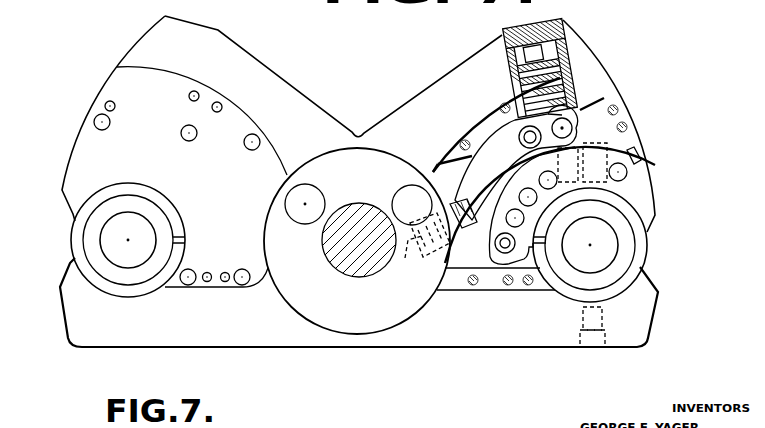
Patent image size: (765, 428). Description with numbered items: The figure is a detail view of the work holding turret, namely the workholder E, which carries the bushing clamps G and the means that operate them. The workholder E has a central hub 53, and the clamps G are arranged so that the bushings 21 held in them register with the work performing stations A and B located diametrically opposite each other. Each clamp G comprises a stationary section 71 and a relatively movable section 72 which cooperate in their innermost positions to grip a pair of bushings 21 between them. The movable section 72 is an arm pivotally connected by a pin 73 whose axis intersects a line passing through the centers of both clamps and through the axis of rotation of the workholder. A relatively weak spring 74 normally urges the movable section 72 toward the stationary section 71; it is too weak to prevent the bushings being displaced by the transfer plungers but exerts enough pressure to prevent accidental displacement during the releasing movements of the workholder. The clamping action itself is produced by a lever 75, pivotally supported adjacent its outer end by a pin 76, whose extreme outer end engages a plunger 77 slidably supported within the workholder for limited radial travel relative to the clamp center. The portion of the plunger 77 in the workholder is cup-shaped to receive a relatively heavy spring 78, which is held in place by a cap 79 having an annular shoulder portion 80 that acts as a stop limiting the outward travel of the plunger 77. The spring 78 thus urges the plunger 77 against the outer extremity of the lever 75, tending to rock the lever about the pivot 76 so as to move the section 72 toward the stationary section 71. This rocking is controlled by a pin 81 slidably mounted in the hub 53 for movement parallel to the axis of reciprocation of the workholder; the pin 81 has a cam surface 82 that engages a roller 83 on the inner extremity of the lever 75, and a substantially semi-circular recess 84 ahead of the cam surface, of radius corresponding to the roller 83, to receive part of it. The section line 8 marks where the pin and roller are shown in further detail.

The work performing station A is at (60, 238).
The work performing station B is at (641, 232).
The workholder E is at (412, 100).
The bushing clamp G is at (167, 198).
The section line 8 is at (373, 174).
The bushing 21 is at (117, 205).
The hub 53 is at (363, 317).
The stationary section 71 is at (620, 287).
The movable section 72 is at (632, 213).
The pin 73 is at (505, 252).
The spring 74 is at (560, 160).
The lever 75 is at (482, 176).
The pin 76 is at (524, 133).
The plunger 77 is at (577, 115).
The spring 78 is at (580, 50).
The cap 79 is at (562, 25).
The annular shoulder portion 80 is at (502, 40).
The pin 81 is at (420, 184).
The cam surface 82 is at (438, 237).
The roller 83 is at (430, 253).
The semi-circular recess 84 is at (386, 203).